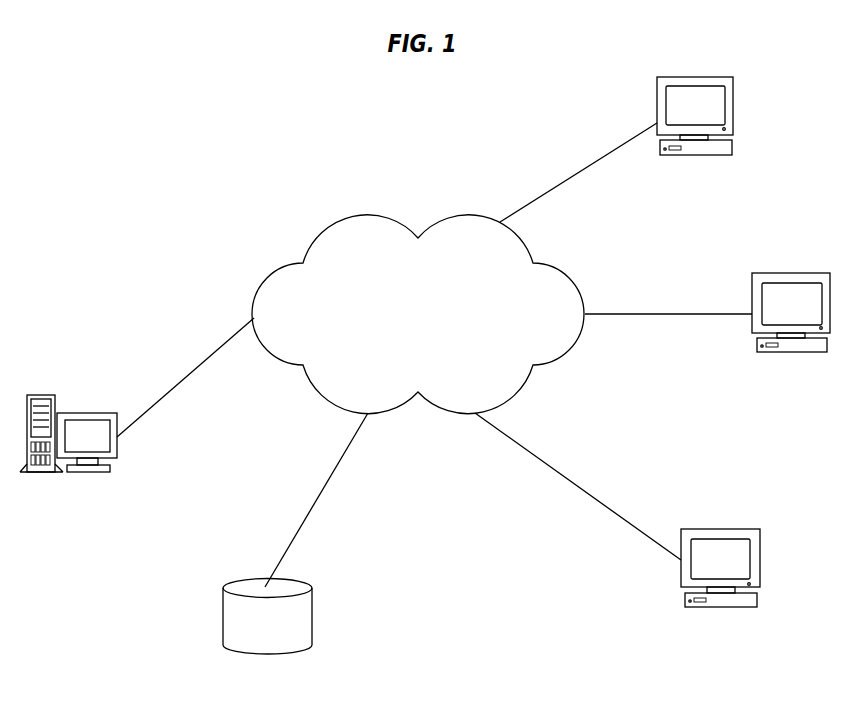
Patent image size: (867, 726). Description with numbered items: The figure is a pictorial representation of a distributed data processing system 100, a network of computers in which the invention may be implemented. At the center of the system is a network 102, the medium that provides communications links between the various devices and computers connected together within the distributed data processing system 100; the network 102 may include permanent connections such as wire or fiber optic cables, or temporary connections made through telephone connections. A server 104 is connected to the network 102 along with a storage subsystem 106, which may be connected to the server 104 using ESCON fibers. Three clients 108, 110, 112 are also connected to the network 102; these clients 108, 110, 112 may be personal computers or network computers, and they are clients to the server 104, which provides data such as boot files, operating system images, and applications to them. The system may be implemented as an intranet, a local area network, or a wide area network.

The distributed data processing system 100 is at (548, 655).
The network 102 is at (401, 313).
The server 104 is at (77, 412).
The storage subsystem 106 is at (253, 650).
The client 108 is at (657, 92).
The client 110 is at (808, 273).
The client 112 is at (757, 606).